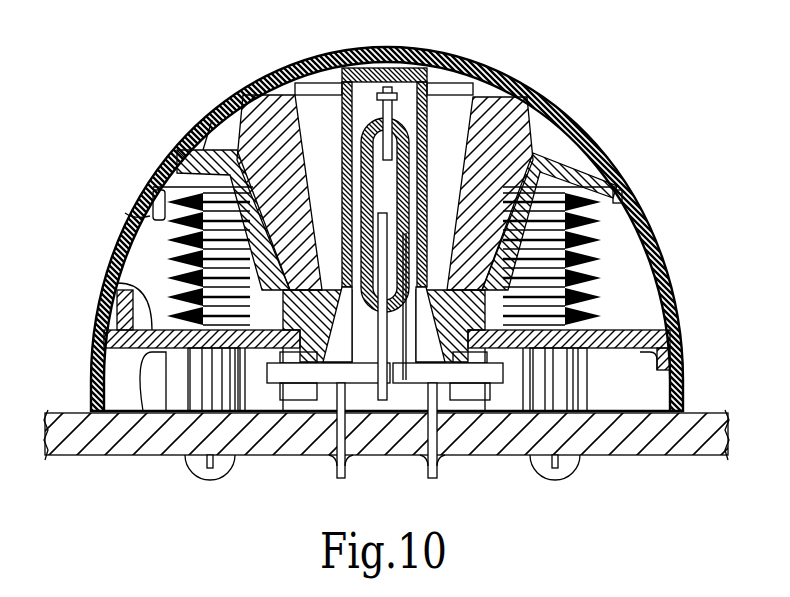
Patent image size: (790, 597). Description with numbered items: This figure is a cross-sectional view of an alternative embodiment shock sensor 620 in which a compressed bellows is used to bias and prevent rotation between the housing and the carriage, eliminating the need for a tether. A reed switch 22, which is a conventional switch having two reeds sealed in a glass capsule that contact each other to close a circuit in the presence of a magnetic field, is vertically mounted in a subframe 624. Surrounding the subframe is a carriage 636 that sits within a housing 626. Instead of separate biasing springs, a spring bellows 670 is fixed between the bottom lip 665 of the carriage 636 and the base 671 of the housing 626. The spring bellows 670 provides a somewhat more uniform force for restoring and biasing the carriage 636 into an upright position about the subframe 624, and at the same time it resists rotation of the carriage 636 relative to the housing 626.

The shock sensor 620 is at (664, 150).
The carriage 636 is at (205, 113).
The reed switch 22 is at (373, 118).
The subframe 624 is at (477, 97).
The spring bellows 670 is at (583, 280).
The bottom lip 665 is at (125, 213).
The base 671 is at (104, 281).
The housing 626 is at (143, 413).